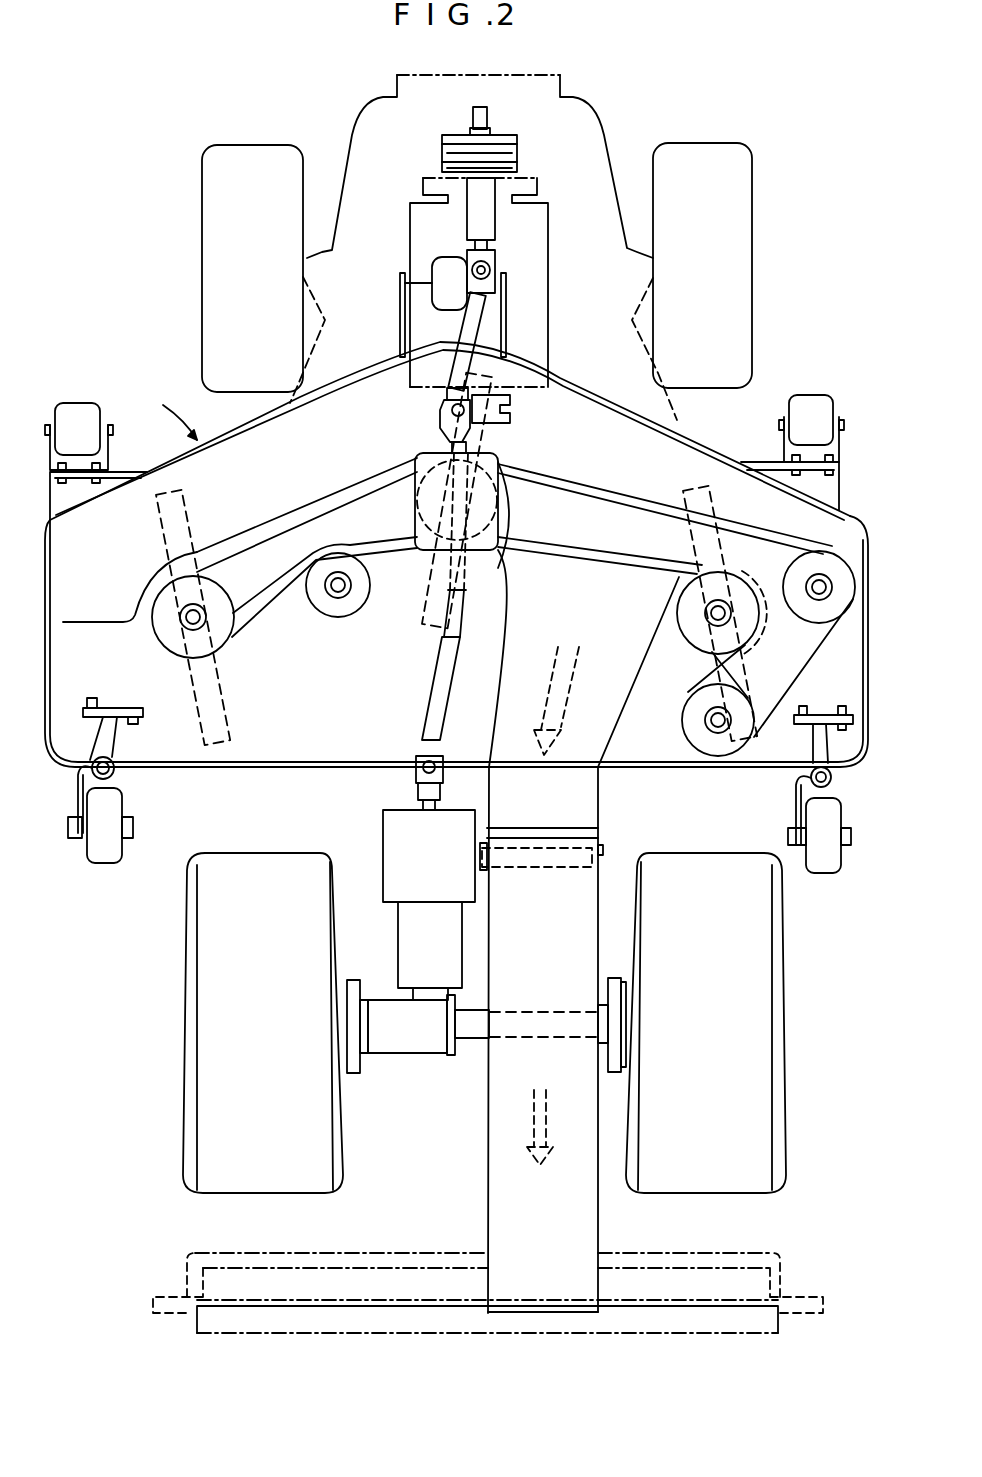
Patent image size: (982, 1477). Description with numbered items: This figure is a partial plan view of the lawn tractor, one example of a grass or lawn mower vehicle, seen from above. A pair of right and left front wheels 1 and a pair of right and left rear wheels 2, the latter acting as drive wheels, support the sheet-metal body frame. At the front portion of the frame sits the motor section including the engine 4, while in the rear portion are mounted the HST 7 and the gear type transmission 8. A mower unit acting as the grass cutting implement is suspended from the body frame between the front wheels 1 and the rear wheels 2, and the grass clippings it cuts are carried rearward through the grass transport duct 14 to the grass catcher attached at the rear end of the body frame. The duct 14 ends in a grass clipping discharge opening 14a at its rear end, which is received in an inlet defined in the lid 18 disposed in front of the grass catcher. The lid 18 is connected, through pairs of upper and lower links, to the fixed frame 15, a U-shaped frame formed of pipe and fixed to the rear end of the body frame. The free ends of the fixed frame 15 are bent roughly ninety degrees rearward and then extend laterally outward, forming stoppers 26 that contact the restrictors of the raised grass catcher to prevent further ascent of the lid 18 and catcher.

The front wheels 1 is at (213, 218).
The rear wheels 2 is at (217, 1103).
The engine 4 is at (552, 272).
The HST 7 is at (397, 848).
The gear type transmission 8 is at (412, 950).
The grass transport duct 14 is at (488, 1171).
The grass clipping discharge opening 14a is at (510, 1316).
The fixed frame 15 is at (693, 1248).
The lid 18 is at (268, 1302).
The stoppers 26 is at (160, 1297).